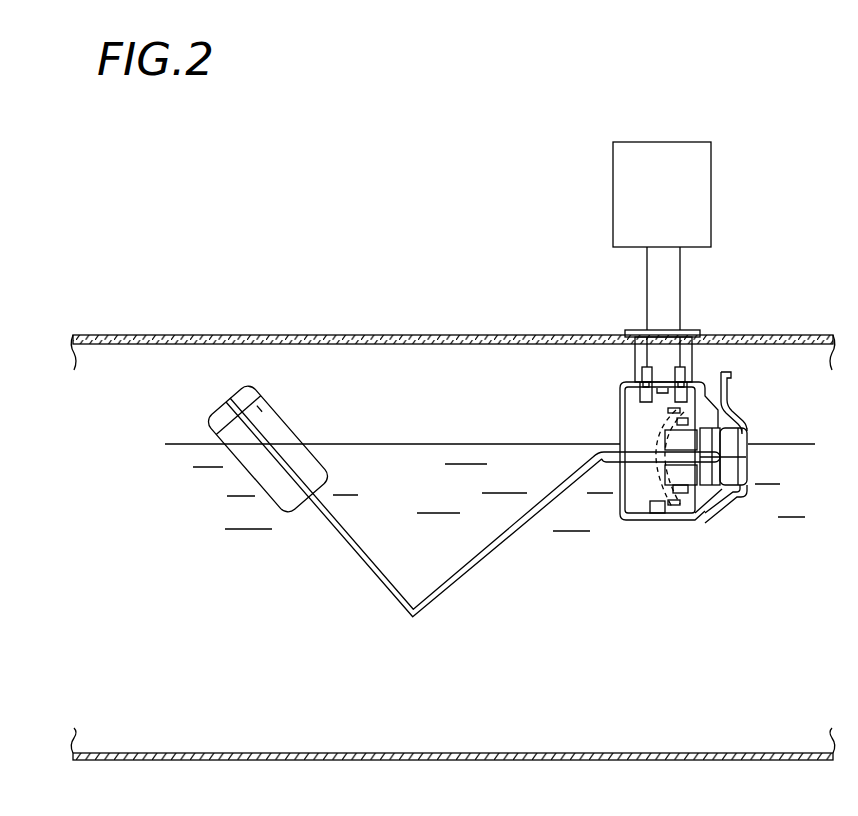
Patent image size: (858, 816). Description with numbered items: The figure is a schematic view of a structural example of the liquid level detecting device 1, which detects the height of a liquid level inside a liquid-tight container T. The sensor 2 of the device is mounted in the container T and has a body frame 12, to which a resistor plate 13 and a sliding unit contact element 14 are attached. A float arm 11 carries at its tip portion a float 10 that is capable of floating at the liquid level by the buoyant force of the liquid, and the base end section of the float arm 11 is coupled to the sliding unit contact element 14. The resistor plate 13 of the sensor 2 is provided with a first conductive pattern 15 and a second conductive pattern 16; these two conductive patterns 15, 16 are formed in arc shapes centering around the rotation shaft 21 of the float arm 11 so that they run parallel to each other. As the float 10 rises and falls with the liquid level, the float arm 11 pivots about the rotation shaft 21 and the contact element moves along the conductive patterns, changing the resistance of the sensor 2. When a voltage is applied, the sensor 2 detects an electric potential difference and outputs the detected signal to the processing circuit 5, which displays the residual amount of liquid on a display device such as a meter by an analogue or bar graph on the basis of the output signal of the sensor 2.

The liquid level detecting device 1 is at (591, 129).
The sensor 2 is at (616, 391).
The processing circuit 5 is at (701, 156).
The float 10 is at (270, 408).
The float arm 11 is at (347, 540).
The body frame 12 is at (685, 515).
The resistor plate 13 is at (632, 493).
The sliding unit contact element 14 is at (669, 450).
The first conductive pattern 15 is at (657, 490).
The second conductive pattern 16 is at (705, 513).
The rotation shaft 21 is at (725, 495).
The liquid-tight container T is at (245, 356).